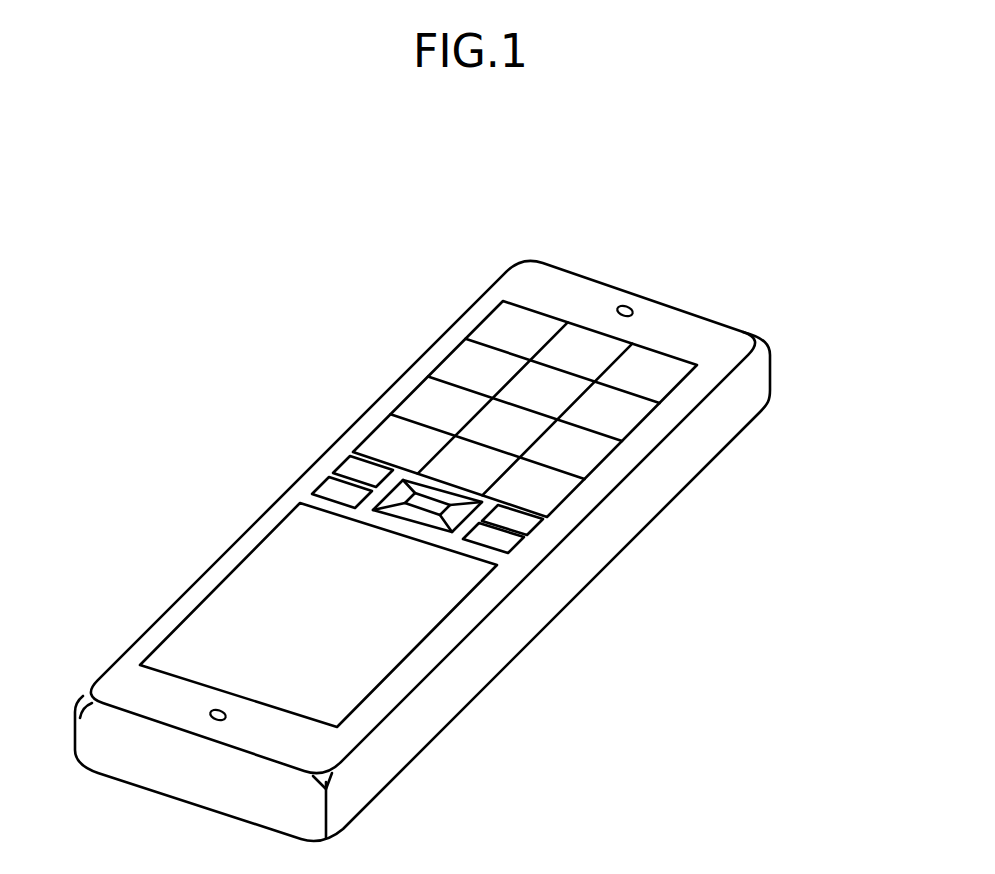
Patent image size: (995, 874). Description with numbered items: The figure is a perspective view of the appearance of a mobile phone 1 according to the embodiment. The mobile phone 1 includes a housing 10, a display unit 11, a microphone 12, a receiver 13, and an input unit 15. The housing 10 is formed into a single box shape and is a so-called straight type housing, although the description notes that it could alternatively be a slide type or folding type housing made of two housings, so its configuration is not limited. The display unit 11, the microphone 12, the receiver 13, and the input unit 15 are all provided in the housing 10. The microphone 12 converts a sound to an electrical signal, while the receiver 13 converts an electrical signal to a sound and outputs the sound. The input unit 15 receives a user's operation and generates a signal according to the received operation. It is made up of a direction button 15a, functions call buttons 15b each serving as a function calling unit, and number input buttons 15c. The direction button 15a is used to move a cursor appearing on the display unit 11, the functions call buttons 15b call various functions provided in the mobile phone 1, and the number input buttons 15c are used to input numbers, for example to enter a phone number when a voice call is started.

The mobile phone 1 is at (829, 193).
The housing 10 is at (519, 257).
The display unit 11 is at (433, 632).
The microphone 12 is at (629, 305).
The receiver 13 is at (208, 713).
The input unit 15 is at (362, 303).
The direction button 15a is at (398, 512).
The functions call buttons 15b is at (320, 485).
The number input buttons 15c is at (467, 367).